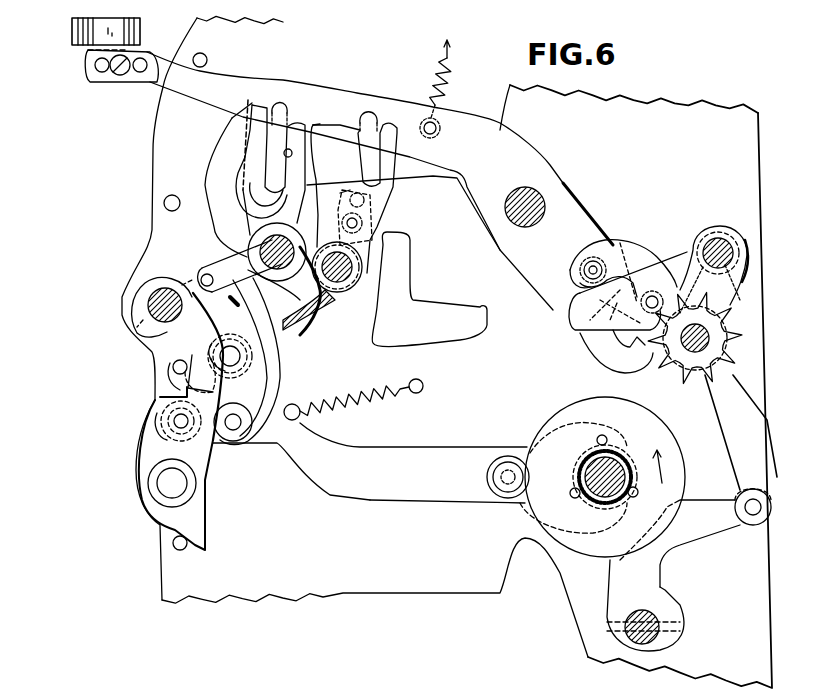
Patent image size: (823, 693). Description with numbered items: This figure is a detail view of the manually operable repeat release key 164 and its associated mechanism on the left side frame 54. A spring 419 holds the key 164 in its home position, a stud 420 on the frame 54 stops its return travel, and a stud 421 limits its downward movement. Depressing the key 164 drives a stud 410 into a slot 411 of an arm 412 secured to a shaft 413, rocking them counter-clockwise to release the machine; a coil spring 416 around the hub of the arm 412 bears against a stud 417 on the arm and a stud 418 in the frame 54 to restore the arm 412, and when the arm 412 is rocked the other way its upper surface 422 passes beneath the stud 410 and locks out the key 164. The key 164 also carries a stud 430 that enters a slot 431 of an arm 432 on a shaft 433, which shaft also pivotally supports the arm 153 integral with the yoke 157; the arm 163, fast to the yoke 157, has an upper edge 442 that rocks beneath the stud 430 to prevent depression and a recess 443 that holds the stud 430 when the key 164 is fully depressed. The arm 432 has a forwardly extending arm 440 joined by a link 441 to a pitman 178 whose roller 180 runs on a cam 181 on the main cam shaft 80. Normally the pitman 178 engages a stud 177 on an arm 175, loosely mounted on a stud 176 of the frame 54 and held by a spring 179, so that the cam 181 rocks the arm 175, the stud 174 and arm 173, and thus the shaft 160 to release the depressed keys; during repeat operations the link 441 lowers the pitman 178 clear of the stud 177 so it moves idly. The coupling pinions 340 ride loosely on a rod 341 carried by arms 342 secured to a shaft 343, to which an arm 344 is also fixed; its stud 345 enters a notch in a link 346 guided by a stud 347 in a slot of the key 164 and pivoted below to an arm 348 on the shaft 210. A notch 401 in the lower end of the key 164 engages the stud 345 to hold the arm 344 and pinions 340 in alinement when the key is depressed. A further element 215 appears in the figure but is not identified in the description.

The left side frame 54 is at (165, 560).
The main cam shaft 80 is at (614, 470).
The arm 153 is at (318, 315).
The yoke 157 is at (290, 338).
The shaft 160 is at (170, 290).
The arm 163 is at (222, 215).
The repeat release key 164 is at (72, 35).
The arm 173 is at (160, 336).
The stud 174 is at (173, 368).
The arm 175 is at (200, 448).
The stud 176 is at (160, 480).
The stud 177 is at (170, 412).
The pitman 178 is at (330, 470).
The spring 179 is at (330, 400).
The roller 180 is at (522, 445).
The cam 181 is at (600, 418).
The shaft 210 is at (655, 635).
The post 215 is at (528, 195).
The coupling pinions 340 is at (745, 338).
The rod 341 is at (685, 352).
The arms 342 is at (745, 297).
The shaft 343 is at (735, 244).
The arm 344 is at (688, 244).
The stud 345 is at (640, 312).
The link 346 is at (615, 255).
The stud 347 is at (585, 270).
The arm 348 is at (712, 525).
The notch 401 is at (640, 343).
The stud 410 is at (368, 108).
The slot 411 is at (367, 162).
The arm 412 is at (347, 187).
The shaft 413 is at (340, 283).
The coil spring 416 is at (362, 221).
The stud 417 is at (372, 222).
The stud 418 is at (365, 200).
The spring 419 is at (450, 72).
The stud 420 is at (202, 53).
The stud 421 is at (172, 195).
The upper surface 422 is at (347, 122).
The stud 430 is at (279, 100).
The slot 431 is at (292, 154).
The arm 432 is at (243, 183).
The shaft 433 is at (288, 235).
The forwardly extending arm 440 is at (230, 266).
The link 441 is at (272, 368).
The upper edge 442 is at (248, 104).
The recess 443 is at (257, 204).